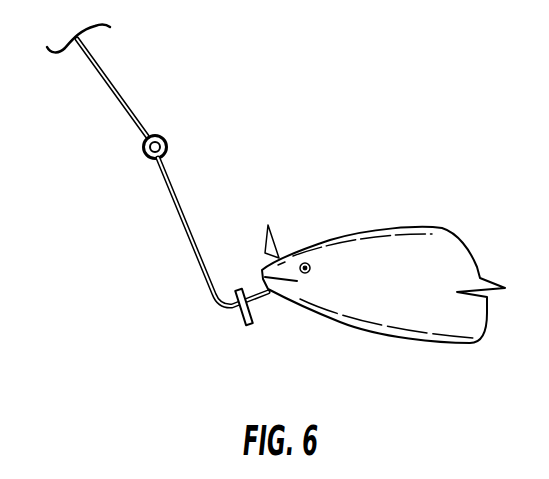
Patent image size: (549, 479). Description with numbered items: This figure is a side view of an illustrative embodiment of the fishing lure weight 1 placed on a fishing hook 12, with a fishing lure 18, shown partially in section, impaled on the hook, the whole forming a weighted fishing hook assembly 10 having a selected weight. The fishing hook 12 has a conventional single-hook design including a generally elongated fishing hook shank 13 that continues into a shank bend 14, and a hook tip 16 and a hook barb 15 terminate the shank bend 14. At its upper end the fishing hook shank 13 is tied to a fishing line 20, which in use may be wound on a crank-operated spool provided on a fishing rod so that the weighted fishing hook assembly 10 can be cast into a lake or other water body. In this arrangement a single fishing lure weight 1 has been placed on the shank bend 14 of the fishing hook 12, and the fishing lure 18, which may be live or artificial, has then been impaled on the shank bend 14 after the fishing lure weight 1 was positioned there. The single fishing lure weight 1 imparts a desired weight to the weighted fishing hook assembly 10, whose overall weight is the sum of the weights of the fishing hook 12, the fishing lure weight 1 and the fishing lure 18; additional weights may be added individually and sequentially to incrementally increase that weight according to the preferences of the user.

The fishing lure weight 1 is at (237, 323).
The weighted fishing hook assembly 10 is at (191, 122).
The fishing hook 12 is at (185, 244).
The fishing hook shank 13 is at (178, 187).
The shank bend 14 is at (258, 310).
The hook barb 15 is at (261, 251).
The hook tip 16 is at (277, 223).
The fishing lure 18 is at (403, 247).
The fishing line 20 is at (113, 82).